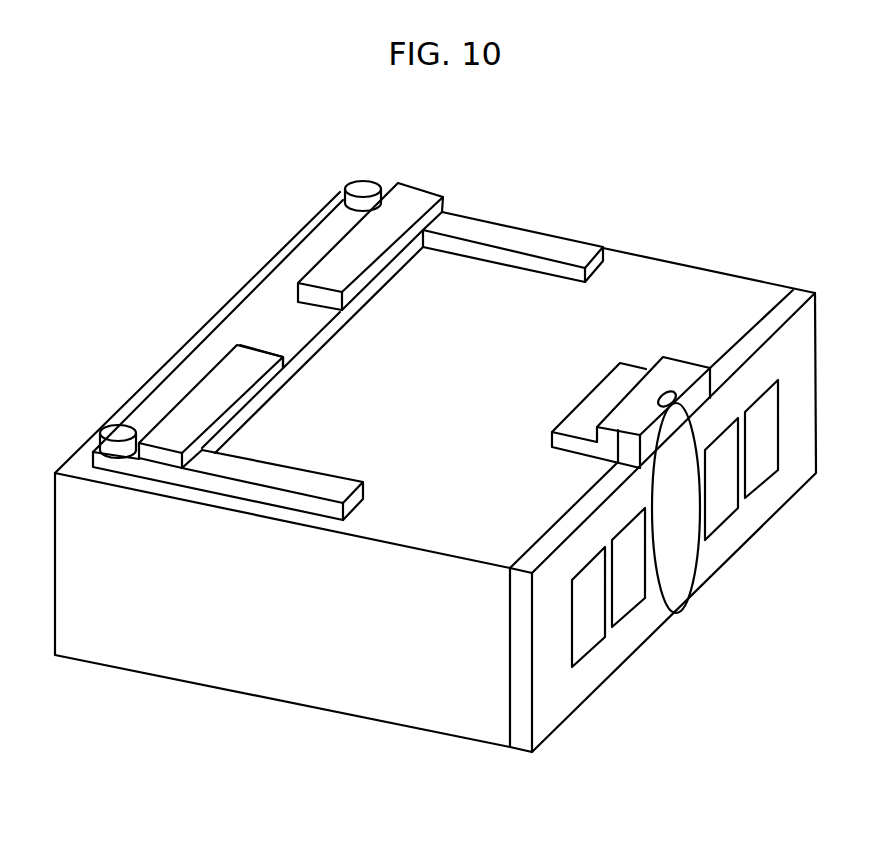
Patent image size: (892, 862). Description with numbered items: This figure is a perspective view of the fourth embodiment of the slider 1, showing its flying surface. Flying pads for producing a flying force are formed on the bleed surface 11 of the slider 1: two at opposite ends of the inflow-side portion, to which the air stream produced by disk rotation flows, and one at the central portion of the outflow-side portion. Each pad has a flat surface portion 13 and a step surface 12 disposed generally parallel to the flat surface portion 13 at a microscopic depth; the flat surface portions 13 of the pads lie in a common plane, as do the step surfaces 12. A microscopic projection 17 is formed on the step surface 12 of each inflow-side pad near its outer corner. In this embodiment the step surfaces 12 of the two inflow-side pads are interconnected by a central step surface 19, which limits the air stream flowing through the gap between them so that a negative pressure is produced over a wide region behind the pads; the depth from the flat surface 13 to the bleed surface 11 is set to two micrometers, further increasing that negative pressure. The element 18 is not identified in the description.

The slider 1 is at (251, 732).
The bleed surface 11 is at (637, 270).
The step surface 12 is at (333, 224).
The flat surface portion 13 is at (415, 198).
The microscopic projection 17 is at (365, 190).
The bar 18 is at (522, 238).
The central step surface 19 is at (293, 338).